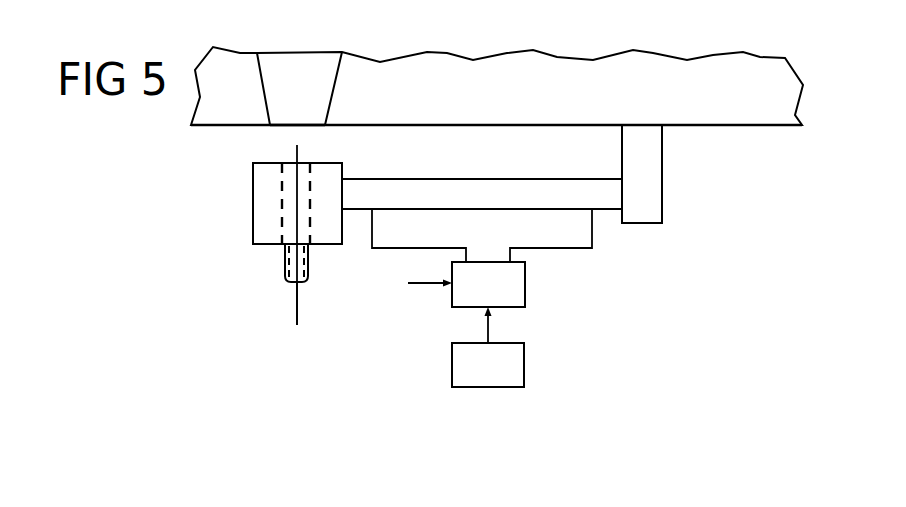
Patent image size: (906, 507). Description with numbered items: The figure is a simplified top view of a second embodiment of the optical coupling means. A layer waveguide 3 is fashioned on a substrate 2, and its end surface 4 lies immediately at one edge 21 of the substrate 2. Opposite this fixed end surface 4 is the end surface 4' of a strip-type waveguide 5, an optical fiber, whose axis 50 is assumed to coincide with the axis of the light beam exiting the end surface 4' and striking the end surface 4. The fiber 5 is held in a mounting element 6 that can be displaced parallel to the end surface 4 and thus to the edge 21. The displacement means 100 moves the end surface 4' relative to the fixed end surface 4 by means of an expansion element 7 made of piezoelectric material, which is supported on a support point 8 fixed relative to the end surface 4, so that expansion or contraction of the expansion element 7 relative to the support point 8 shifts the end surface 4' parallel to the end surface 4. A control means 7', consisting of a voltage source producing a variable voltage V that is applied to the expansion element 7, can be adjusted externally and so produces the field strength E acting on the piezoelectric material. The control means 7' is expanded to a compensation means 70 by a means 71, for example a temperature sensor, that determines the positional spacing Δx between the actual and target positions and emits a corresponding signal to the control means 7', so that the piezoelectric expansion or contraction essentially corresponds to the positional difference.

The substrate 2 is at (663, 82).
The edge of the substrate 21 is at (760, 127).
The layer waveguide 3 is at (298, 70).
The end surface 4 is at (320, 143).
The end surface 4' is at (257, 226).
The strip-type waveguide 5 is at (283, 263).
The axis of the strip-type waveguide 50 is at (290, 300).
The mounting element 6 is at (263, 202).
The expansion element 7 is at (482, 175).
The control means 7' is at (571, 288).
The support point 8 is at (647, 192).
The compensation means 70 is at (584, 323).
The means for determining the positional spacing 71 is at (525, 367).
The displacement means 100 is at (362, 220).